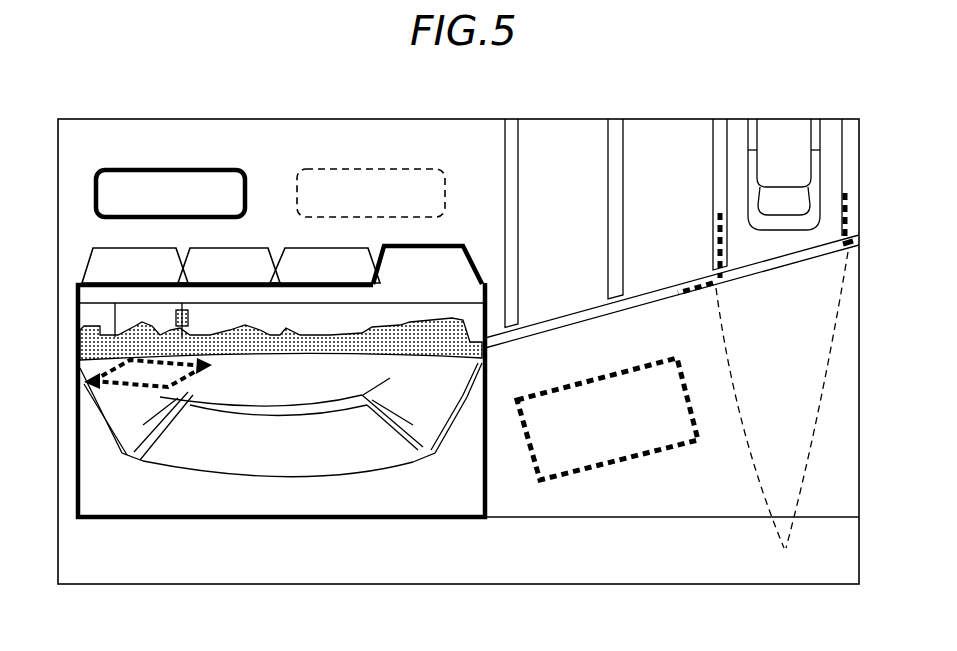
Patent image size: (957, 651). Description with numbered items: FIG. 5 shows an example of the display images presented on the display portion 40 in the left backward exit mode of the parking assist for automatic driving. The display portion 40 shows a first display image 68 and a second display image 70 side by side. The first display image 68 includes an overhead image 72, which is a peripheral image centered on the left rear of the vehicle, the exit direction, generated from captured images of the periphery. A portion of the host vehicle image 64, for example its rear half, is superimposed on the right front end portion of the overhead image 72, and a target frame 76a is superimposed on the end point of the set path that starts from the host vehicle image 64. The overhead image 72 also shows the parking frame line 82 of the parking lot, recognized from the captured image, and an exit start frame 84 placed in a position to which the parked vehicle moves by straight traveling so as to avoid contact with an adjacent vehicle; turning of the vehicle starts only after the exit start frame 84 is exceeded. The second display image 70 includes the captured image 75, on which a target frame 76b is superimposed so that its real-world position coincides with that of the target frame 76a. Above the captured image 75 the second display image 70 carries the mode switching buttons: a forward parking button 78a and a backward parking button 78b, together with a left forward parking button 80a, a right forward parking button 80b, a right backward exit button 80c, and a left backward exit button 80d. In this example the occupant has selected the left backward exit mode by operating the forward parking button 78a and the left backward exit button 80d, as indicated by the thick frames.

The display portion 40 is at (827, 119).
The host vehicle image 64 is at (783, 122).
The first display image 68 is at (682, 543).
The second display image 70 is at (263, 543).
The overhead image 72 is at (738, 519).
The captured image 75 is at (388, 519).
The target frame 76a is at (593, 472).
The target frame 76b is at (160, 392).
The forward parking button 78a is at (177, 169).
The backward parking button 78b is at (377, 168).
The left forward parking button 80a is at (100, 247).
The right forward parking button 80b is at (255, 247).
The right backward exit button 80c is at (293, 247).
The left backward exit button 80d is at (463, 245).
The parking frame line 82 is at (618, 126).
The exit start frame 84 is at (787, 550).